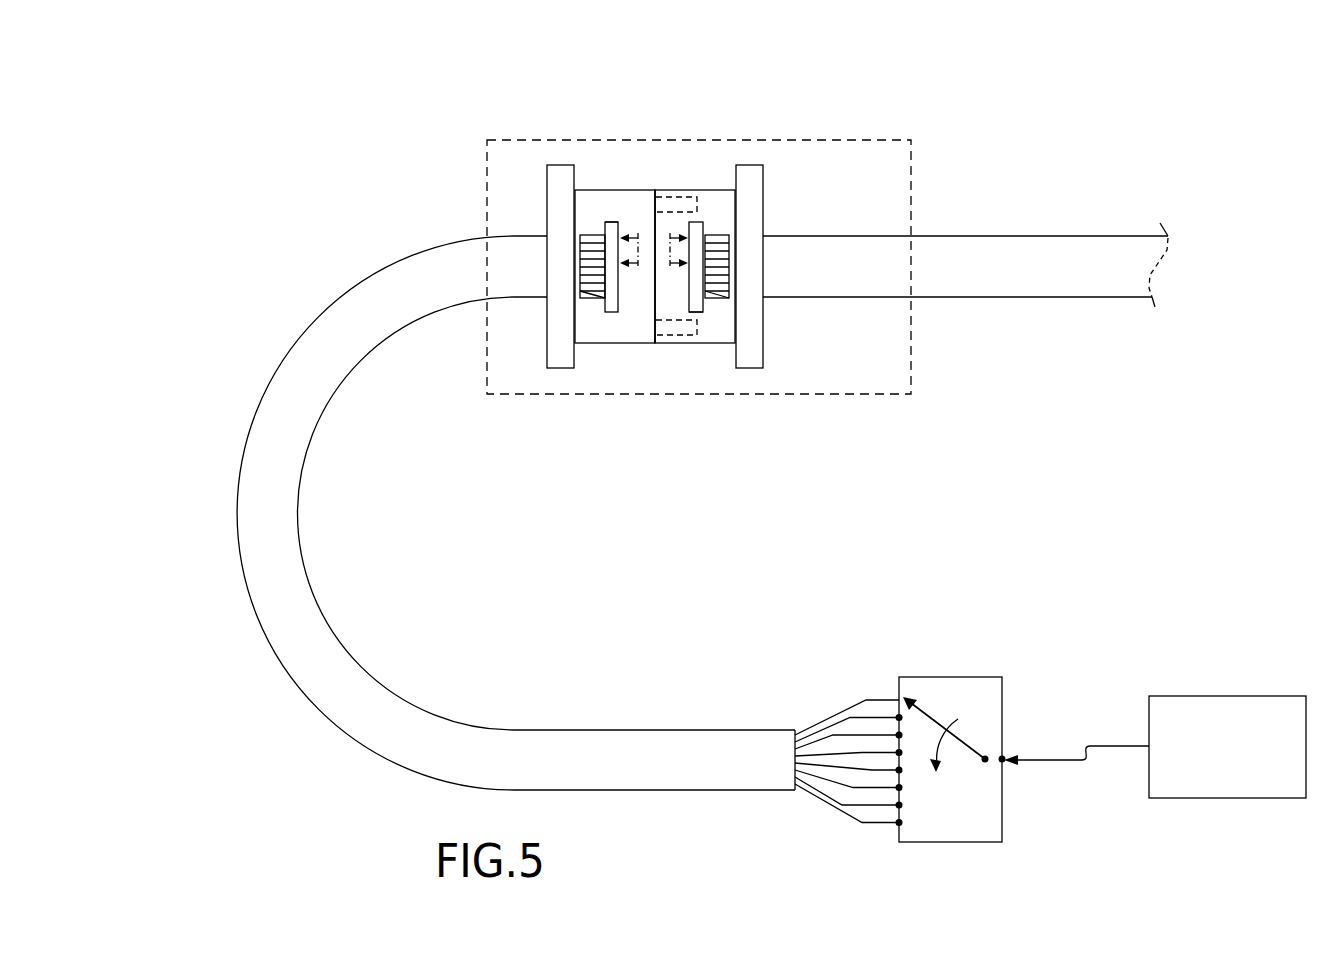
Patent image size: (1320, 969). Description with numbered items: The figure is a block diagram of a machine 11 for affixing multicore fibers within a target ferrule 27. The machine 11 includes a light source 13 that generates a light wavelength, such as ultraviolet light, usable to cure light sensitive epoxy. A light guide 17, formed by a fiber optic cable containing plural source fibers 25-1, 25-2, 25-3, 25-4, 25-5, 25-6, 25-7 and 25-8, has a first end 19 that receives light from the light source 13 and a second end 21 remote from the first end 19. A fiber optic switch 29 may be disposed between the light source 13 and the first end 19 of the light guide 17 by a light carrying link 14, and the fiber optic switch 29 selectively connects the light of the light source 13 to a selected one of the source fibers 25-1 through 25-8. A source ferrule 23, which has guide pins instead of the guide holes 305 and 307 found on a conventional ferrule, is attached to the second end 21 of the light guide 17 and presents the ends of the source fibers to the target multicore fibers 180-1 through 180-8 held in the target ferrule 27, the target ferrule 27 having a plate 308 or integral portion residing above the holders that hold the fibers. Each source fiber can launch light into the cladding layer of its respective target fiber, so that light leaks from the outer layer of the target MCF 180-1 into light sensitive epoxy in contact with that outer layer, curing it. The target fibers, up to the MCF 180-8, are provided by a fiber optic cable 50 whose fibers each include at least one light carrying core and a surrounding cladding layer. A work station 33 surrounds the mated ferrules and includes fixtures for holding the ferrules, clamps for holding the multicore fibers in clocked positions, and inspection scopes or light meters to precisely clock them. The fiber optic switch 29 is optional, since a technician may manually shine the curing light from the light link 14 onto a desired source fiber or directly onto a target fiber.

The machine 11 is at (437, 143).
The light source 13 is at (1243, 760).
The light carrying link 14 is at (1102, 746).
The light guide 17 is at (608, 755).
The first end 19 is at (940, 710).
The second end 21 is at (608, 358).
The source ferrule 23 is at (635, 203).
The source fiber 25-1 is at (588, 233).
The source fiber 25-2 is at (827, 802).
The source fiber 25-3 is at (853, 788).
The source fiber 25-4 is at (875, 771).
The source fiber 25-5 is at (863, 750).
The source fiber 25-6 is at (833, 738).
The source fiber 25-7 is at (817, 730).
The source fiber 25-8 is at (587, 300).
The target ferrule 27 is at (712, 198).
The fiber optic switch 29 is at (972, 694).
The work station 33 is at (910, 162).
The fiber optic cable 50 is at (1052, 257).
The target MCF 180-1 is at (720, 237).
The target MCF 180-8 is at (720, 300).
The guide hole 305 is at (677, 203).
The guide hole 307 is at (675, 336).
The plate 308 is at (609, 203).